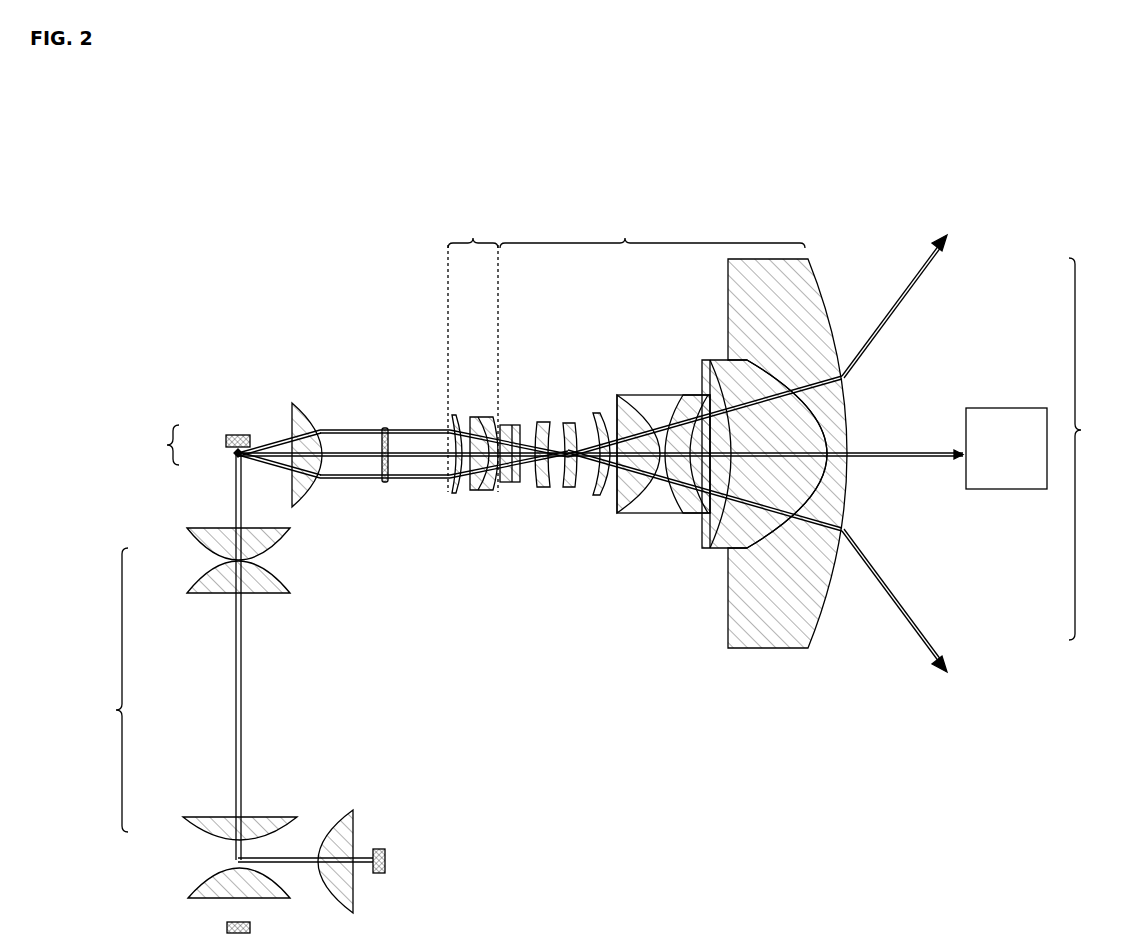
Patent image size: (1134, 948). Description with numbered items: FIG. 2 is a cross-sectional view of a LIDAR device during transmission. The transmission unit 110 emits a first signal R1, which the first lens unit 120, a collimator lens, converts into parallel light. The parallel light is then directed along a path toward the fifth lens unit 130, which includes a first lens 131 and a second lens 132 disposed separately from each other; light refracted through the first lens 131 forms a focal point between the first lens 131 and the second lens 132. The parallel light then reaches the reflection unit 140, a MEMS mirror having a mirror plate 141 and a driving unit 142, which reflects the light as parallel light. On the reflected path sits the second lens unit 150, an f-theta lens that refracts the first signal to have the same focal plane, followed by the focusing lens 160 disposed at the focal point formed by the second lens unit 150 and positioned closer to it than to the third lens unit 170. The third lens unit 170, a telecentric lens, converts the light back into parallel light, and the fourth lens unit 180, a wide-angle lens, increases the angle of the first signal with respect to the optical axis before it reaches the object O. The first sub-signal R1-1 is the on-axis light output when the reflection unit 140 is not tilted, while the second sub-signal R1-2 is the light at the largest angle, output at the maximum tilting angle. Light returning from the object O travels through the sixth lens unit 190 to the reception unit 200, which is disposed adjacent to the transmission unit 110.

The transmission unit 110 is at (386, 855).
The first lens unit 120 is at (349, 900).
The fifth lens unit 130 is at (189, 684).
The first lens 131 is at (183, 819).
The second lens 132 is at (187, 560).
The reflection unit 140 is at (193, 444).
The mirror plate 141 is at (234, 453).
The driving unit 142 is at (226, 440).
The second lens unit 150 is at (293, 403).
The focusing lens 160 is at (384, 428).
The third lens unit 170 is at (473, 355).
The fourth lens unit 180 is at (658, 431).
The sixth lens unit 190 is at (188, 893).
The reception unit 200 is at (227, 929).
The object O is at (1007, 408).
The first signal R1 is at (1087, 449).
The first sub-signal R1-1 is at (903, 462).
The second sub-signal R1-2 is at (925, 272).